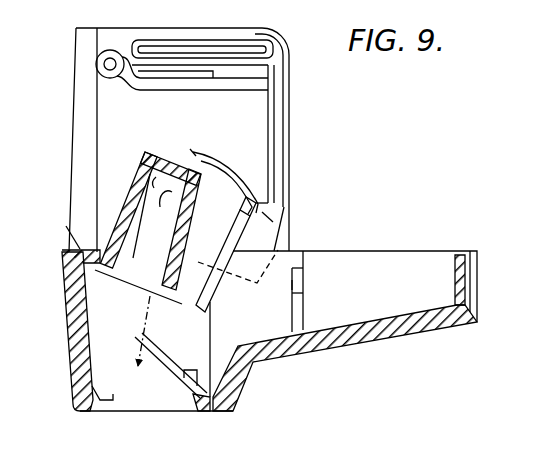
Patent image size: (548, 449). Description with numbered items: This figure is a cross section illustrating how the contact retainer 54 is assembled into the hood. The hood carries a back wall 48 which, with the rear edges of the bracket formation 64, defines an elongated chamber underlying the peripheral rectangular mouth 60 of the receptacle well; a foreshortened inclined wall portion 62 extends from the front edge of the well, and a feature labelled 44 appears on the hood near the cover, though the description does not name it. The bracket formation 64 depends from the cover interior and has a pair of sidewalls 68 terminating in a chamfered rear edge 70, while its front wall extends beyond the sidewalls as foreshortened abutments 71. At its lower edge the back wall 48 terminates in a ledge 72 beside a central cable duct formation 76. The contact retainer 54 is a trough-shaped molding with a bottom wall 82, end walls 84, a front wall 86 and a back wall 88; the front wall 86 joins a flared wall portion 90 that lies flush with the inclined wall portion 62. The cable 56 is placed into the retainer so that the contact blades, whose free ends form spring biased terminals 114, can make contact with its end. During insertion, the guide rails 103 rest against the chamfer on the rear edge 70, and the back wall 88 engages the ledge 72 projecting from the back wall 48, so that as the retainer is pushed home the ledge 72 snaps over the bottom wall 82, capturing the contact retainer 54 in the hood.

The pivot pin 44 is at (97, 61).
The back wall 48 is at (70, 343).
The contact retainer 54 is at (163, 139).
The cable 56 is at (212, 163).
The peripheral rectangular mouth 60 is at (106, 399).
The inclined wall portion 62 is at (173, 384).
The bracket formation 64 is at (314, 296).
The sidewalls 68 is at (252, 313).
The rear edge 70 is at (207, 348).
The abutments 71 is at (304, 312).
The ledge 72 is at (66, 234).
The cable duct formation 76 is at (70, 146).
The bottom wall 82 is at (169, 156).
The end walls 84 is at (157, 213).
The front wall 86 is at (188, 215).
The back wall 88 is at (132, 183).
The flared wall portion 90 is at (183, 278).
The guide rails 103 is at (244, 231).
The spring biased terminal 114 is at (159, 197).